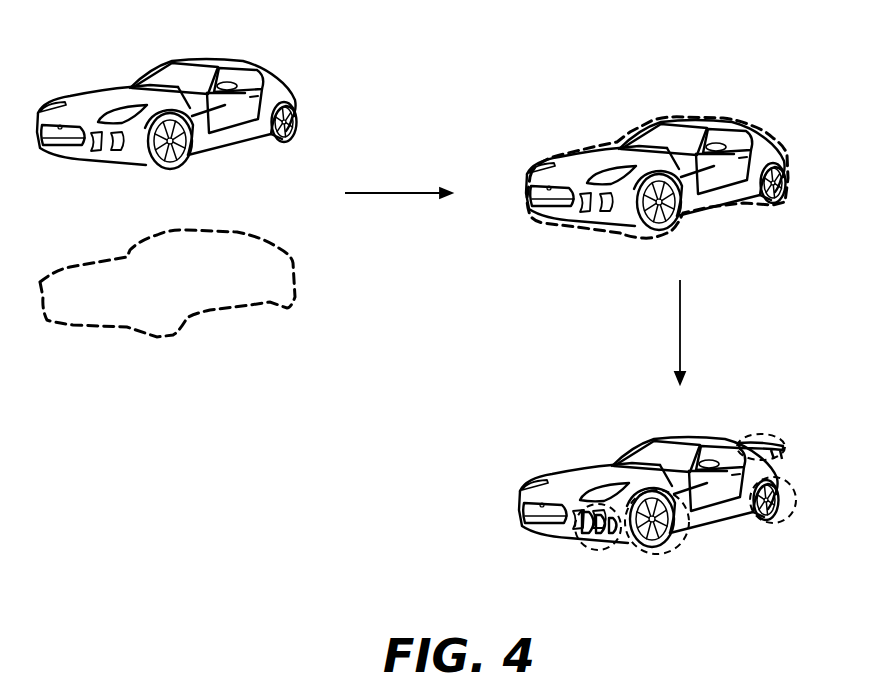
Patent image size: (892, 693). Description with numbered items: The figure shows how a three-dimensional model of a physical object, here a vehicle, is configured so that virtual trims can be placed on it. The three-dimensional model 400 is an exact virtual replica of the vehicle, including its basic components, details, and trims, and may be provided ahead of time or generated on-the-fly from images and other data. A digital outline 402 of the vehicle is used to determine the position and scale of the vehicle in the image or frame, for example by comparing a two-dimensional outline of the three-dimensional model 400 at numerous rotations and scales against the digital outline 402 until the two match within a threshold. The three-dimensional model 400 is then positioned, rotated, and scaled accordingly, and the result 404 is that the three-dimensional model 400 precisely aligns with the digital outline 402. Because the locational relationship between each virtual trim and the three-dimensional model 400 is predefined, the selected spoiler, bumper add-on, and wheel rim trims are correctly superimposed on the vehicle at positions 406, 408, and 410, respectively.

The 3D model 400 is at (92, 69).
The digital outline 402 is at (167, 282).
The result 404 is at (662, 183).
The spoiler position 406 is at (778, 439).
The bumper add-on position 408 is at (598, 540).
The wheel rim position 410 is at (710, 526).